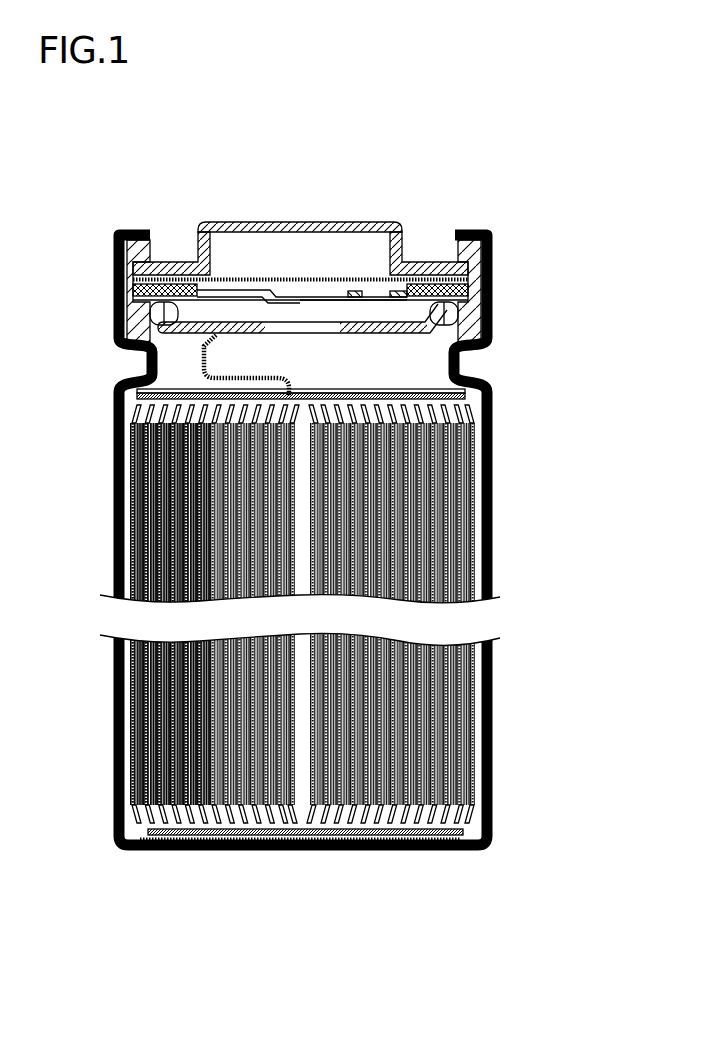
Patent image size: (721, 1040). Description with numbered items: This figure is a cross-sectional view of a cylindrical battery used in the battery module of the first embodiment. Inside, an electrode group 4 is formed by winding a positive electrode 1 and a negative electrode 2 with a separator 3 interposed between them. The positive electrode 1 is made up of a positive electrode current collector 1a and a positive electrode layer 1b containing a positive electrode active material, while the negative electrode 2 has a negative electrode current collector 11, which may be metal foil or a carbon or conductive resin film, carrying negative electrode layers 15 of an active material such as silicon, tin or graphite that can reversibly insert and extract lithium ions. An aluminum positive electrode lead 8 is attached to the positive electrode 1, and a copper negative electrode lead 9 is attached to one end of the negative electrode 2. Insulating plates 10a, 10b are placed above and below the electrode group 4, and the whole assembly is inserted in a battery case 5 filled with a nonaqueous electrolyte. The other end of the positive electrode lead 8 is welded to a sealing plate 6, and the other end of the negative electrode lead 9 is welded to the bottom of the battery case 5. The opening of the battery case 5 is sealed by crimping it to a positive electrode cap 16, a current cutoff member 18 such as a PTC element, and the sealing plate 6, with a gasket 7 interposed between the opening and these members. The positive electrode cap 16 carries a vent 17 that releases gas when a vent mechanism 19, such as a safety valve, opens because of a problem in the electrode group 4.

The positive electrode 1 is at (564, 413).
The positive electrode current collector 1a is at (472, 440).
The positive electrode layer 1b is at (472, 462).
The negative electrode 2 is at (396, 614).
The separator 3 is at (462, 406).
The electrode group 4 is at (383, 605).
The battery case 5 is at (490, 690).
The sealing plate 6 is at (487, 299).
The gasket 7 is at (487, 237).
The positive electrode lead 8 is at (210, 370).
The negative electrode lead 9 is at (468, 822).
The insulating plate 10a is at (480, 378).
The insulating plate 10b is at (150, 832).
The negative electrode current collector 11 is at (472, 513).
The negative electrode layers 15 is at (472, 534).
The positive electrode cap 16 is at (330, 224).
The vent 17 is at (400, 225).
The current cutoff member 18 is at (477, 288).
The vent mechanism 19 is at (368, 277).